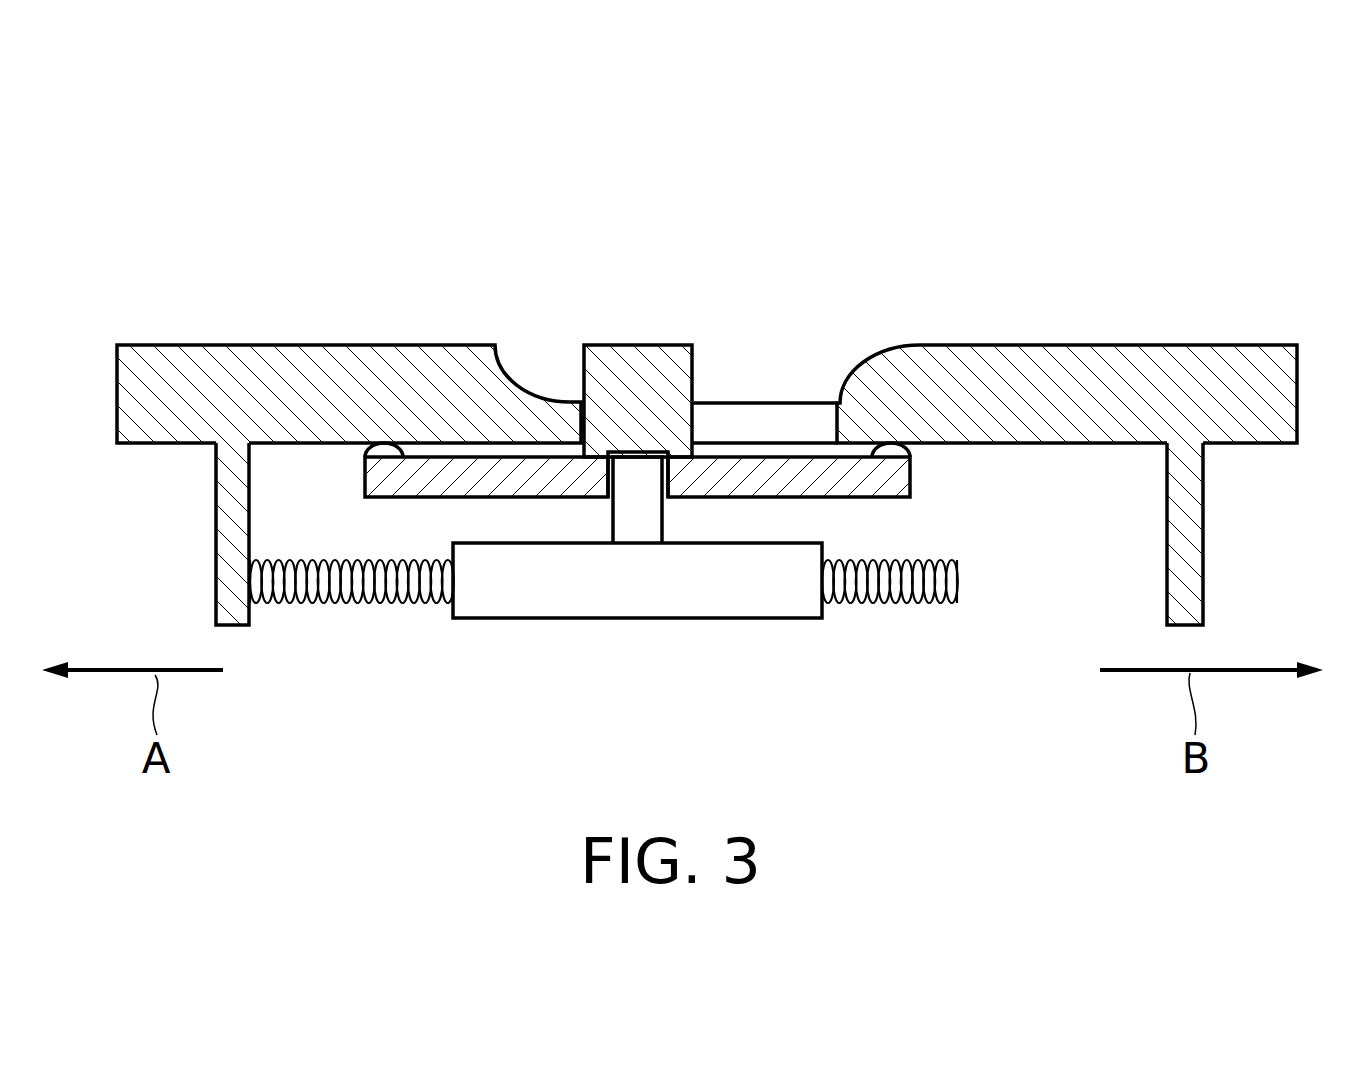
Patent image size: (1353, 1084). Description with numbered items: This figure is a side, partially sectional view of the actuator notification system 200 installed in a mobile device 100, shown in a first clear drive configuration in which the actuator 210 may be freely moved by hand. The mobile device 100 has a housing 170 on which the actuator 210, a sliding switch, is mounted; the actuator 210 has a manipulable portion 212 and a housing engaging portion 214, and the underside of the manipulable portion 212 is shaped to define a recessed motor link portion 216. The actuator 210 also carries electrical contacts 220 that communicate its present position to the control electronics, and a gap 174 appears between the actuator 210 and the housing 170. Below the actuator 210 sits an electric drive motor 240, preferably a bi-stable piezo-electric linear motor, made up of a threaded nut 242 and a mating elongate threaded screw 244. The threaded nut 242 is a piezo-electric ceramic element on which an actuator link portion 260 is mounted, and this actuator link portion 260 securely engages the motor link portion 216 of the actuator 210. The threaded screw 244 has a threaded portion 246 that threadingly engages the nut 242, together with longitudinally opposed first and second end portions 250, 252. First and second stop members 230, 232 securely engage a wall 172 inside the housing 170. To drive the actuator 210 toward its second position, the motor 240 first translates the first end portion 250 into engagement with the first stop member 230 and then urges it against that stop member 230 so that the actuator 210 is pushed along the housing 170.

The mobile device 100 is at (706, 368).
The housing 170 is at (1225, 345).
The wall 172 is at (236, 392).
The opening 174 is at (728, 398).
The actuator notification system 200 is at (624, 643).
The actuator 210 is at (699, 331).
The manipulable portion 212 is at (628, 383).
The housing engaging portion 214 is at (786, 470).
The motor link portion 216 is at (631, 448).
The electrical contacts 220 is at (385, 450).
The first stop member 230 is at (226, 540).
The second stop member 232 is at (1184, 548).
The electric drive motor 240 is at (353, 626).
The threaded nut 242 is at (585, 636).
The threaded screw 244 is at (887, 630).
The threaded portion 246 is at (424, 603).
The first end portion 250 is at (251, 602).
The second end portion 252 is at (946, 600).
The actuator link portion 260 is at (637, 515).